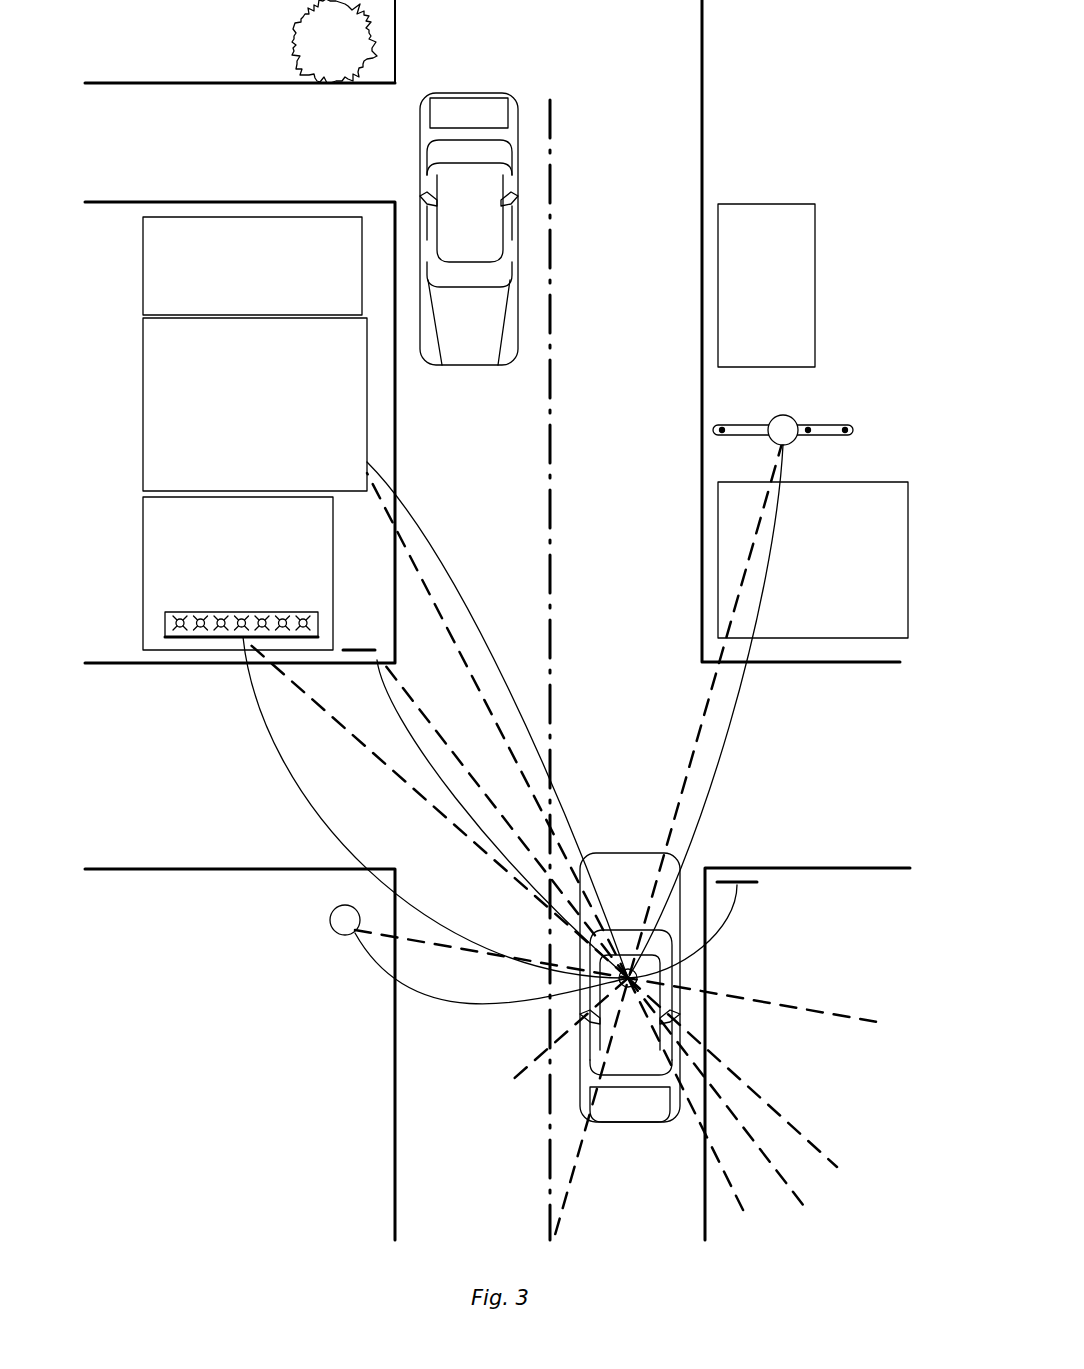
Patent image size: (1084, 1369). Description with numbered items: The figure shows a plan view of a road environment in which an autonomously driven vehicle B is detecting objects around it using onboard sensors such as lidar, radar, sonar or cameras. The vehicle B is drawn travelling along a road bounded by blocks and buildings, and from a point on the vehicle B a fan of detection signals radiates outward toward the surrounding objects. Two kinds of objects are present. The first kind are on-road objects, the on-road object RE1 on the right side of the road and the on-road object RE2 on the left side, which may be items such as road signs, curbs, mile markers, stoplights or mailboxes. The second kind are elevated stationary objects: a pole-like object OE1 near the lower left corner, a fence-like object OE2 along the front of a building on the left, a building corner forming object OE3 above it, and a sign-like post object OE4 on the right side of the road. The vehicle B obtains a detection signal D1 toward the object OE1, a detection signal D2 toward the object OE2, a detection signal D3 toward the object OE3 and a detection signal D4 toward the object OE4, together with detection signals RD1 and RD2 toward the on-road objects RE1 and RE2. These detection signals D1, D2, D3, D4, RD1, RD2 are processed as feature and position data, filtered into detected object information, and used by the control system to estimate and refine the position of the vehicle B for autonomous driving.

The elevated stationary object OE1 is at (333, 935).
The elevated stationary object OE2 is at (180, 647).
The elevated stationary object OE3 is at (367, 443).
The elevated stationary object OE4 is at (852, 427).
The on-road object RE1 is at (755, 884).
The on-road object RE2 is at (352, 650).
The detection signal RD1 is at (728, 905).
The detection signal RD2 is at (387, 702).
The detection signal D1 is at (453, 1007).
The detection signal D2 is at (302, 768).
The detection signal D3 is at (408, 502).
The detection signal D4 is at (728, 745).
The vehicle B is at (628, 1122).